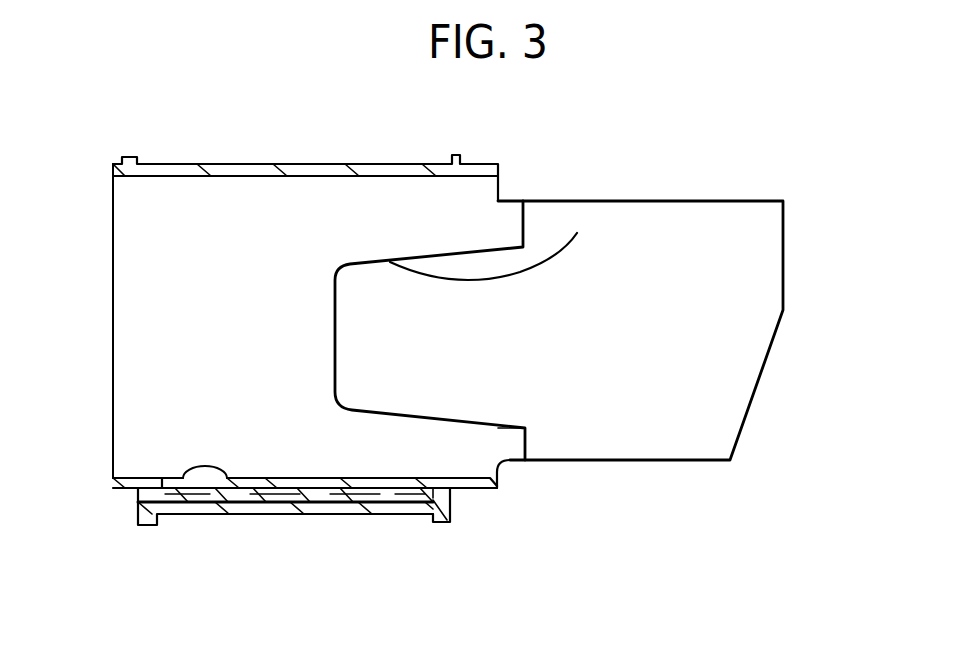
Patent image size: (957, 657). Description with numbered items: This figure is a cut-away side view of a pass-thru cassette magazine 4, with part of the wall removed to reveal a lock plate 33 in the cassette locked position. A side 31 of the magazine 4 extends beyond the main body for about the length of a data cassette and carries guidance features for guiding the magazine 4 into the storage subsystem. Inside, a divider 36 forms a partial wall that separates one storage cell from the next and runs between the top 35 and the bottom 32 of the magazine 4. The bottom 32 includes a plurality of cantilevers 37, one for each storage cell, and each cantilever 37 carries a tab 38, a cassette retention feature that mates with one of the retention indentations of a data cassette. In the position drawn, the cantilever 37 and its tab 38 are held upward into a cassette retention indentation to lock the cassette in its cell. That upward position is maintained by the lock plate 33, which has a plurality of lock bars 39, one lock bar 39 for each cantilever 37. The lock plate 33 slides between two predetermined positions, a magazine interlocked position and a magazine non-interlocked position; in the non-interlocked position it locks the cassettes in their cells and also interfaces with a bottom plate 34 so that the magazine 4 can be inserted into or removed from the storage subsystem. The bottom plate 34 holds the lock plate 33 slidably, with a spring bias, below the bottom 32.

The magazine 4 is at (186, 132).
The side 31 is at (728, 253).
The bottom 32 is at (452, 496).
The lock plate 33 is at (367, 492).
The bottom plate 34 is at (442, 525).
The top 35 is at (110, 167).
The divider 36 is at (577, 233).
The cantilever 37 is at (278, 478).
The tab 38 is at (192, 472).
The lock bar 39 is at (237, 498).